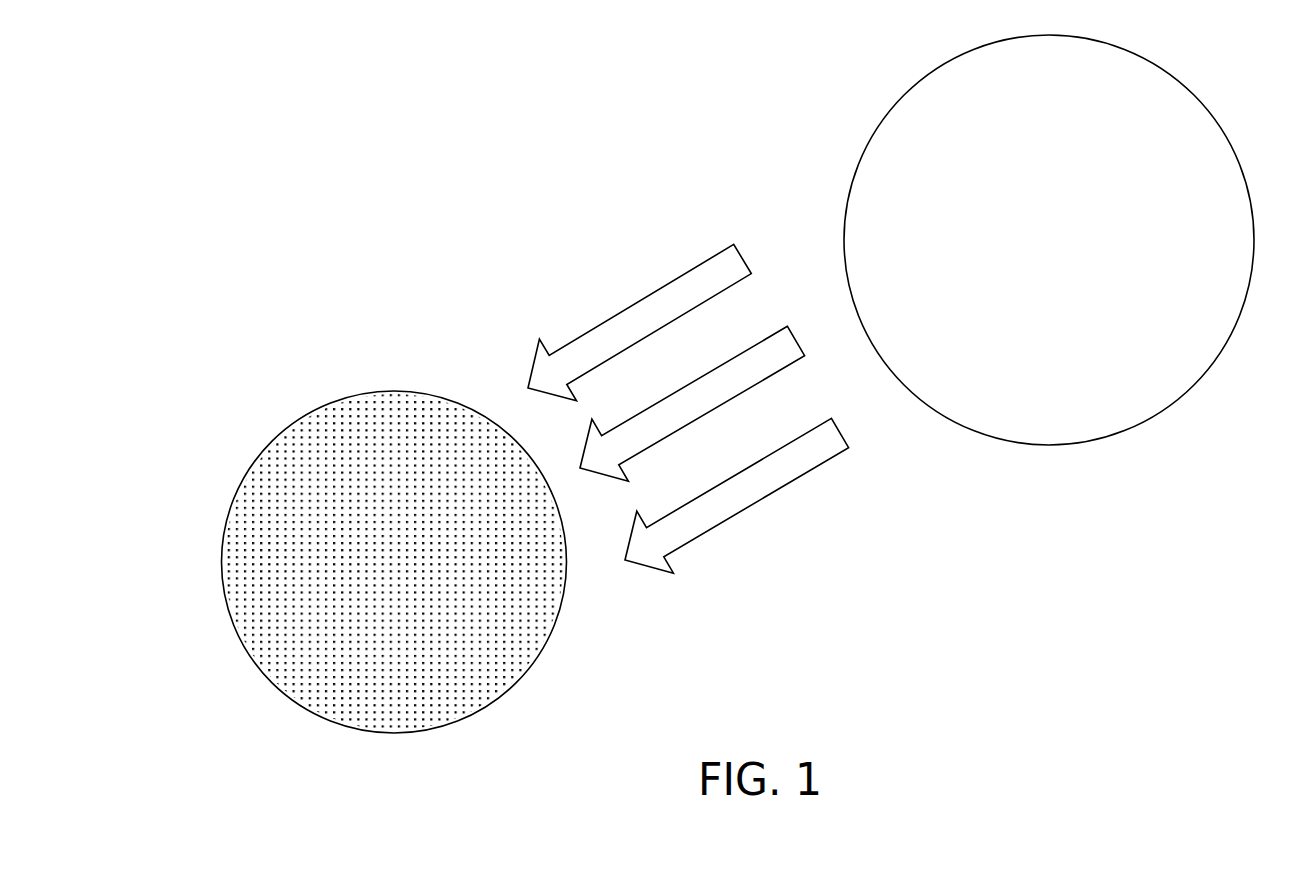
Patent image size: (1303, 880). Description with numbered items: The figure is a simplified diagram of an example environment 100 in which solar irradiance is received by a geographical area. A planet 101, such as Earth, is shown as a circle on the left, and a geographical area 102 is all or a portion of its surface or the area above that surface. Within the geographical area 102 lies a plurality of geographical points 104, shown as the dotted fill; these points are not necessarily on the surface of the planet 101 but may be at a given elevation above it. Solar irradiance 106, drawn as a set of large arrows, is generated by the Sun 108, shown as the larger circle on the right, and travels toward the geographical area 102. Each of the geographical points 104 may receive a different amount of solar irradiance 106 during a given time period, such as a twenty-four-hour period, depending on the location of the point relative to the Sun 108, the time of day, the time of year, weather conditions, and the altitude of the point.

The environment 100 is at (313, 190).
The planet 101 is at (212, 638).
The geographical area 102 is at (360, 733).
The geographical points 104 is at (290, 532).
The solar irradiance 106 is at (643, 268).
The Sun 108 is at (1080, 443).